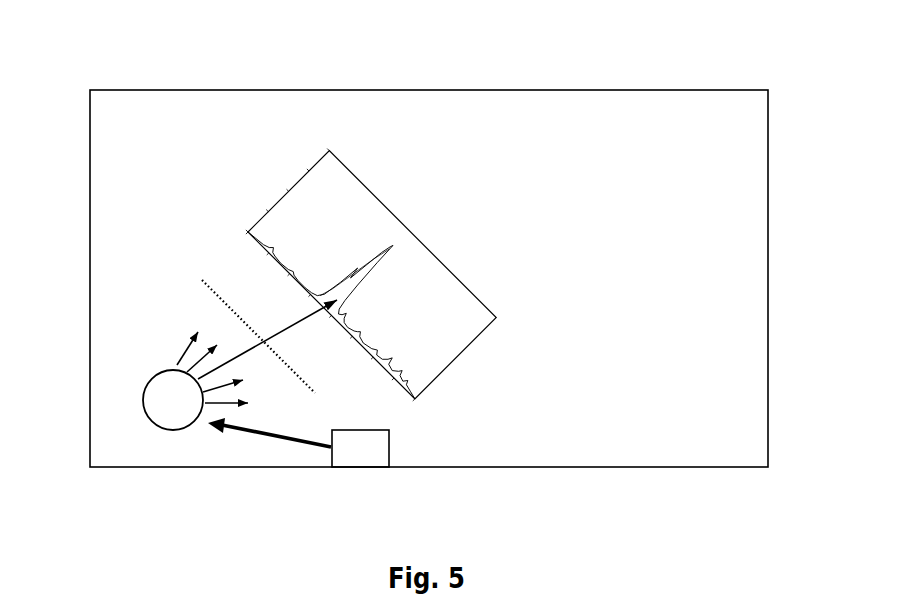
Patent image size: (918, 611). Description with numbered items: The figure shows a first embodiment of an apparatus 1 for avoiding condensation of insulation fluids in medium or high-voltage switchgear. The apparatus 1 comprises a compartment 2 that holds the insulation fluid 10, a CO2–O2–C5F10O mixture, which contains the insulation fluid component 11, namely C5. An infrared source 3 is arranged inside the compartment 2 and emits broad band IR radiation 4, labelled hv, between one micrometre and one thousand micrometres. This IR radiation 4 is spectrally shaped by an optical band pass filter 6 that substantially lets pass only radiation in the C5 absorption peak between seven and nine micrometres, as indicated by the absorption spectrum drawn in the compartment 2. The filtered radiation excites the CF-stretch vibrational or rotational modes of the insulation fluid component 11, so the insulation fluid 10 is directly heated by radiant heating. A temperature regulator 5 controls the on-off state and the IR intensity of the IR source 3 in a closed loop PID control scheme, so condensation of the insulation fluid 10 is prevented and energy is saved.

The apparatus 1 is at (714, 78).
The compartment 2 is at (353, 212).
The IR source 3 is at (154, 434).
The IR radiation 4 is at (236, 340).
The temperature regulator 5 is at (332, 467).
The optical band pass filter 6 is at (245, 309).
The insulation fluid 10 is at (160, 112).
The insulation fluid component 11 is at (160, 112).